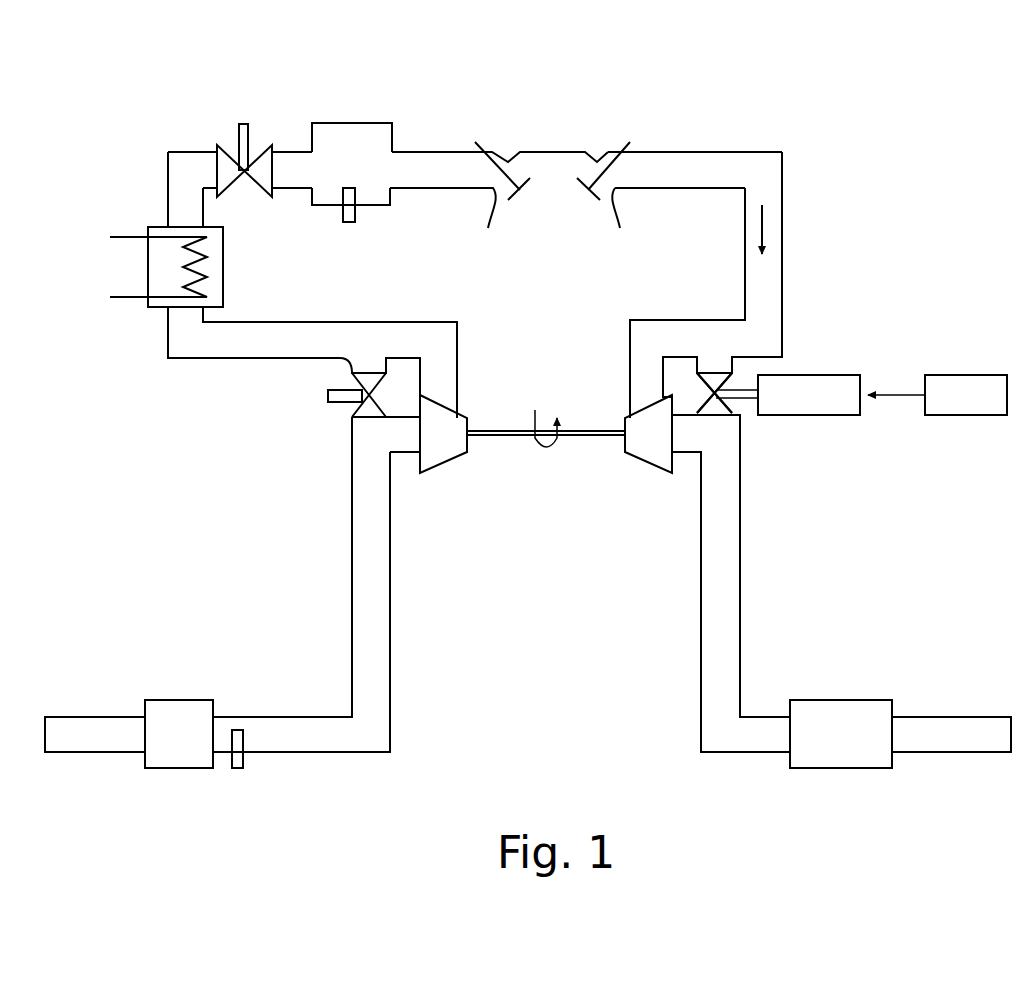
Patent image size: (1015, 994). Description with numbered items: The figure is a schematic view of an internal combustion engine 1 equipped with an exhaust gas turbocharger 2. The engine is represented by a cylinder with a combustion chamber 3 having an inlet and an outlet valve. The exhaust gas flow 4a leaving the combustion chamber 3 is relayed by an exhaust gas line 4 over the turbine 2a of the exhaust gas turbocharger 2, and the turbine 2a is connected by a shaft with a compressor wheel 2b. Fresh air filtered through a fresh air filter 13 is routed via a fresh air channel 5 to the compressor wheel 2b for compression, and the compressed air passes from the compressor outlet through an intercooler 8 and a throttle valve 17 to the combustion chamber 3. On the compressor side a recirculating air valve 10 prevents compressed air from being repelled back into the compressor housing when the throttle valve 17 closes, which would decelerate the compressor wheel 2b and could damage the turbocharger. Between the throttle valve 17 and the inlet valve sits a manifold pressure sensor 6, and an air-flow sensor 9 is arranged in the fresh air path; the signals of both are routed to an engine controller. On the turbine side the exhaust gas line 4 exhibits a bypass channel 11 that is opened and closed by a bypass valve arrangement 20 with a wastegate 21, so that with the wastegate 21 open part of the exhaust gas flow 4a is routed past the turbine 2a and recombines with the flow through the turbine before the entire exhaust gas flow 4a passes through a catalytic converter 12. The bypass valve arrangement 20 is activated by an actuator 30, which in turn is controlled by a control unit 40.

The internal combustion engine 1 is at (832, 136).
The exhaust gas turbocharger 2 is at (546, 523).
The turbine 2a is at (655, 466).
The compressor wheel 2b is at (435, 470).
The combustion chamber 3 is at (554, 136).
The exhaust gas line 4 is at (763, 177).
The exhaust gas flow 4a is at (763, 232).
The fresh air channel 5 is at (367, 562).
The manifold pressure sensor 6 is at (368, 216).
The intercooler 8 is at (136, 312).
The air-flow sensor 9 is at (244, 755).
The recirculating air valve 10 is at (330, 410).
The bypass channel 11 is at (735, 365).
The catalytic converter 12 is at (840, 700).
The fresh air filter 13 is at (175, 768).
The throttle valve 17 is at (245, 123).
The bypass valve arrangement 20 is at (737, 410).
The wastegate 21 is at (714, 393).
The actuator 30 is at (841, 395).
The control unit 40 is at (966, 395).